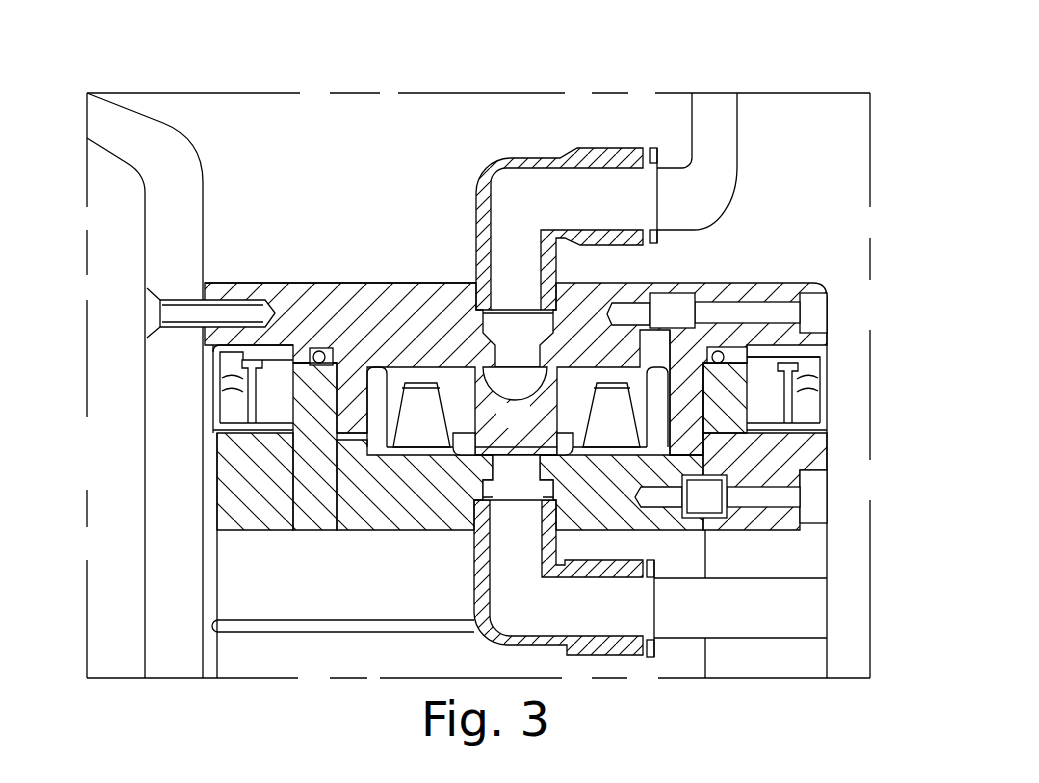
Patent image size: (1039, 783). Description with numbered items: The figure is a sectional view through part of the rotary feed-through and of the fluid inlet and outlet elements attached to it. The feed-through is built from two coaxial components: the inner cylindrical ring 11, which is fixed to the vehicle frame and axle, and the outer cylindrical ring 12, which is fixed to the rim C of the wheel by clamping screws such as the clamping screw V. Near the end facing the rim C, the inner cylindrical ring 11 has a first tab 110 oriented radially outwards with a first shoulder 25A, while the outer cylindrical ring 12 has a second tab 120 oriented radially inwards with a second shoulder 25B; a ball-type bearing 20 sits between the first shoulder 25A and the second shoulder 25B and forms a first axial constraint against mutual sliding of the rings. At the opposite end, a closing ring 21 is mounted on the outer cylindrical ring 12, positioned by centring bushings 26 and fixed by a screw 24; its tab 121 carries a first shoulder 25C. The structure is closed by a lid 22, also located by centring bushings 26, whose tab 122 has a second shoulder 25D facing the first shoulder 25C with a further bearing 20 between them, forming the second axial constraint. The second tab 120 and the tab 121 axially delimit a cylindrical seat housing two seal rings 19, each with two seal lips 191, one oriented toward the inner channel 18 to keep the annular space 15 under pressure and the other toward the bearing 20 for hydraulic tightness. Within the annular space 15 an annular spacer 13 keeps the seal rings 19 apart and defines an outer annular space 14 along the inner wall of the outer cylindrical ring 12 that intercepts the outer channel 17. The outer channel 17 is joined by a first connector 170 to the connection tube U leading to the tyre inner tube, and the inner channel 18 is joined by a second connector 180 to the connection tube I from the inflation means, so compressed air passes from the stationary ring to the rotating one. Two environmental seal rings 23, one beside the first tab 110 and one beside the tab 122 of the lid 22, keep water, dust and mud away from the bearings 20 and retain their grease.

The inner cylindrical ring 11 is at (340, 493).
The outer cylindrical ring 12 is at (420, 328).
The annular spacer 13 is at (527, 425).
The outer annular space 14 is at (528, 395).
The annular space 15 is at (503, 445).
The outer channel 17 is at (518, 350).
The inner channel 18 is at (505, 470).
The seal ring 19 is at (432, 433).
The bearing 20 is at (313, 345).
The closing ring 21 is at (683, 353).
The lid 22 is at (727, 455).
The environmental seal ring 23 is at (218, 397).
The screw 24 is at (767, 307).
The first shoulder 25A is at (294, 363).
The second shoulder 25B is at (340, 385).
The first shoulder 25C is at (702, 355).
The second shoulder 25D is at (775, 368).
The centring bushing 26 is at (663, 297).
The first tab 110 is at (315, 423).
The second tab 120 is at (380, 330).
The tab 121 is at (687, 418).
The tab 122 is at (718, 403).
The first connector 170 is at (523, 160).
The second connector 180 is at (507, 587).
The seal lip 191 is at (385, 450).
The rim C is at (128, 138).
The connection tube U is at (715, 150).
The clamping screw V is at (160, 314).
The connection tube I is at (757, 610).